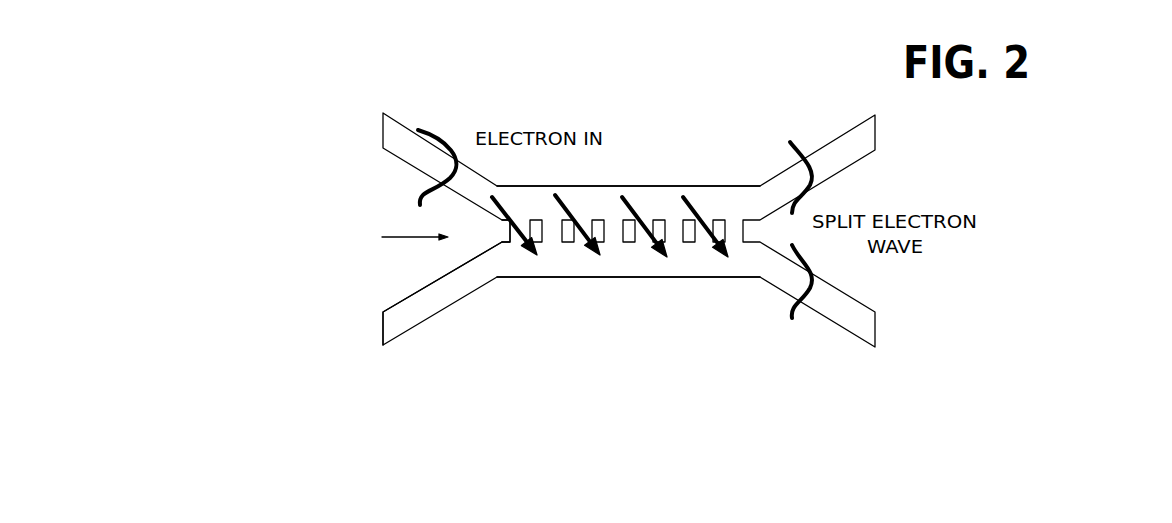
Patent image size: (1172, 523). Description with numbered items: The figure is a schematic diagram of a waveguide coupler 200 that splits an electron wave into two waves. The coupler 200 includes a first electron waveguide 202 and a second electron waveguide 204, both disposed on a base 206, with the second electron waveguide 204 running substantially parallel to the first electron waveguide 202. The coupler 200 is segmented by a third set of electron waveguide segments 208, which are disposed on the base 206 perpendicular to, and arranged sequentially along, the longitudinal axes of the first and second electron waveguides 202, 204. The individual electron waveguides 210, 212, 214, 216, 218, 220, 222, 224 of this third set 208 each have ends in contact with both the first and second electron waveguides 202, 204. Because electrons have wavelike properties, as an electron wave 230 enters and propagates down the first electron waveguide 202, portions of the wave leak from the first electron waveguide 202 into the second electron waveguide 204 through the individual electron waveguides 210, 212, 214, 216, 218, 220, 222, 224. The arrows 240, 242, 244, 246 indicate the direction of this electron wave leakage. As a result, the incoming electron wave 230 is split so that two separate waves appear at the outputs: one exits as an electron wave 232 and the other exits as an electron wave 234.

The waveguide coupler 200 is at (1111, 174).
The first electron waveguide 202 is at (517, 187).
The second electron waveguide 204 is at (505, 279).
The base 206 is at (481, 345).
The third set of electron waveguide segments 208 is at (395, 238).
The individual electron waveguide 210 is at (505, 231).
The individual electron waveguide 212 is at (552, 243).
The individual electron waveguide 214 is at (583, 213).
The individual electron waveguide 216 is at (615, 243).
The individual electron waveguide 218 is at (647, 217).
The individual electron waveguide 220 is at (675, 243).
The individual electron waveguide 222 is at (707, 218).
The individual electron waveguide 224 is at (737, 243).
The electron wave 230 is at (457, 145).
The electron wave 232 is at (803, 146).
The electron wave 234 is at (808, 317).
The arrow 240 is at (532, 258).
The arrow 242 is at (595, 258).
The arrow 244 is at (657, 259).
The arrow 246 is at (718, 259).